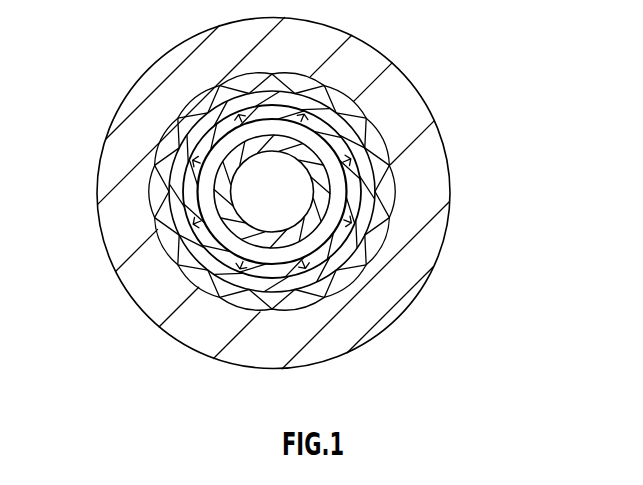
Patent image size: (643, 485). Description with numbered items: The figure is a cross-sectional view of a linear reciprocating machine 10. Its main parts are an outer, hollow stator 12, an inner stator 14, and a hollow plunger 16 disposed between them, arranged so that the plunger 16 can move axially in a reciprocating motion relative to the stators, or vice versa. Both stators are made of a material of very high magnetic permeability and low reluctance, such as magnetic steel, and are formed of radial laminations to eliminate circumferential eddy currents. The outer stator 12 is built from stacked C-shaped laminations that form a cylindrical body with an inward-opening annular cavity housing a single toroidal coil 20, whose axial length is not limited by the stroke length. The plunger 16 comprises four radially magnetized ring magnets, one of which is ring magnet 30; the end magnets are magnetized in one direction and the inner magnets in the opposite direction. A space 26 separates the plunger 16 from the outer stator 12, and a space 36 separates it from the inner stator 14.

The linear reciprocating machine 10 is at (567, 133).
The outer hollow stator 12 is at (125, 113).
The inner stator 14 is at (322, 190).
The hollow plunger 16 is at (372, 53).
The toroidal coil 20 is at (157, 177).
The space 26 is at (177, 217).
The ring magnet 30 is at (207, 143).
The space 36 is at (358, 127).